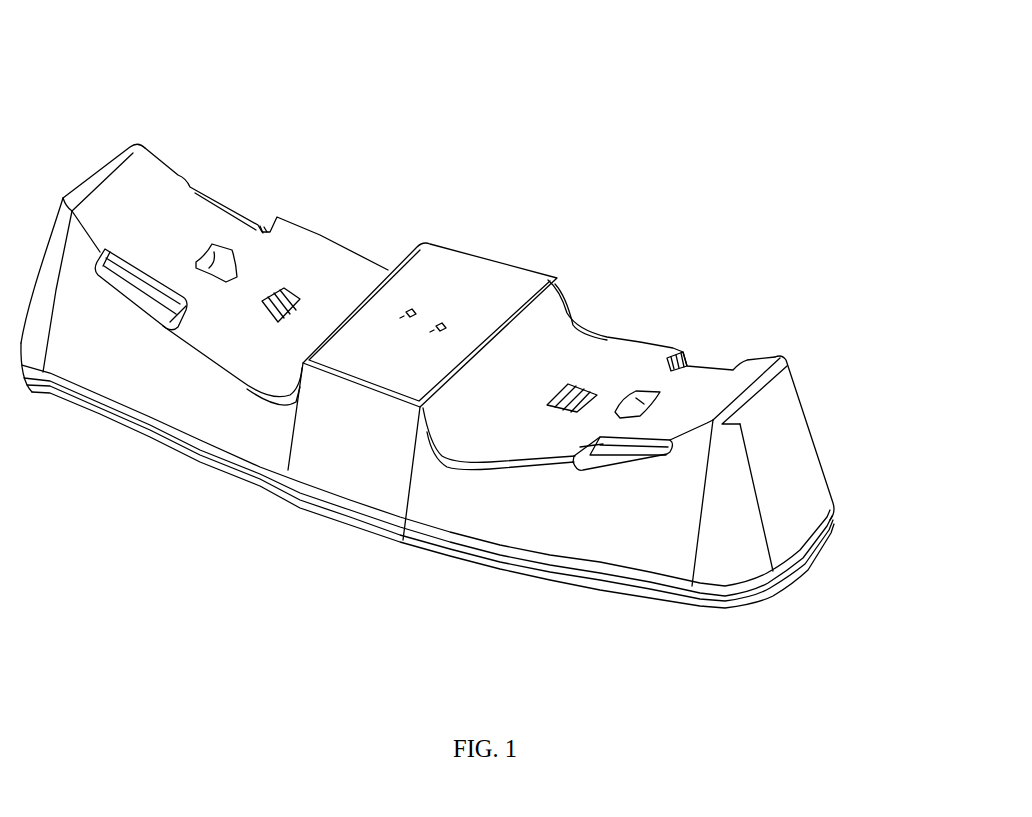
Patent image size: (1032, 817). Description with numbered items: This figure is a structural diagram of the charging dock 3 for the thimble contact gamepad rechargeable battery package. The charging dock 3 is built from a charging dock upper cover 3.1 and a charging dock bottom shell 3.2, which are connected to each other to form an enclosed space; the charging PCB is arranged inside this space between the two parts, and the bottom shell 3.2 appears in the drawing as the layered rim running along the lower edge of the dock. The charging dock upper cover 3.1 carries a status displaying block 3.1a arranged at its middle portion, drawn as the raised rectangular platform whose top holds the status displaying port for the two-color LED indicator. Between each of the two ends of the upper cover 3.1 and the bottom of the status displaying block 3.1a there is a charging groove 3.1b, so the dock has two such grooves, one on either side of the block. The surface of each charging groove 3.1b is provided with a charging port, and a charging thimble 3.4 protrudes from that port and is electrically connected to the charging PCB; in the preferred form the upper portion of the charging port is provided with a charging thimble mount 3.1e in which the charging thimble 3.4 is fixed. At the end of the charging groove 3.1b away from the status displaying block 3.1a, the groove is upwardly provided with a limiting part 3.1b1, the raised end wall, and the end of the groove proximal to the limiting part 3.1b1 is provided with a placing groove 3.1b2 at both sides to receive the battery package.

The charging dock 3 is at (516, 280).
The charging dock upper cover 3.1 is at (766, 448).
The charging dock bottom shell 3.2 is at (583, 577).
The status displaying block 3.1a is at (443, 262).
The charging groove 3.1b is at (286, 256).
The limiting part 3.1b1 is at (117, 160).
The placing groove 3.1b2 is at (230, 207).
The charging thimble mount 3.1e is at (589, 392).
The charging thimble 3.4 is at (569, 385).